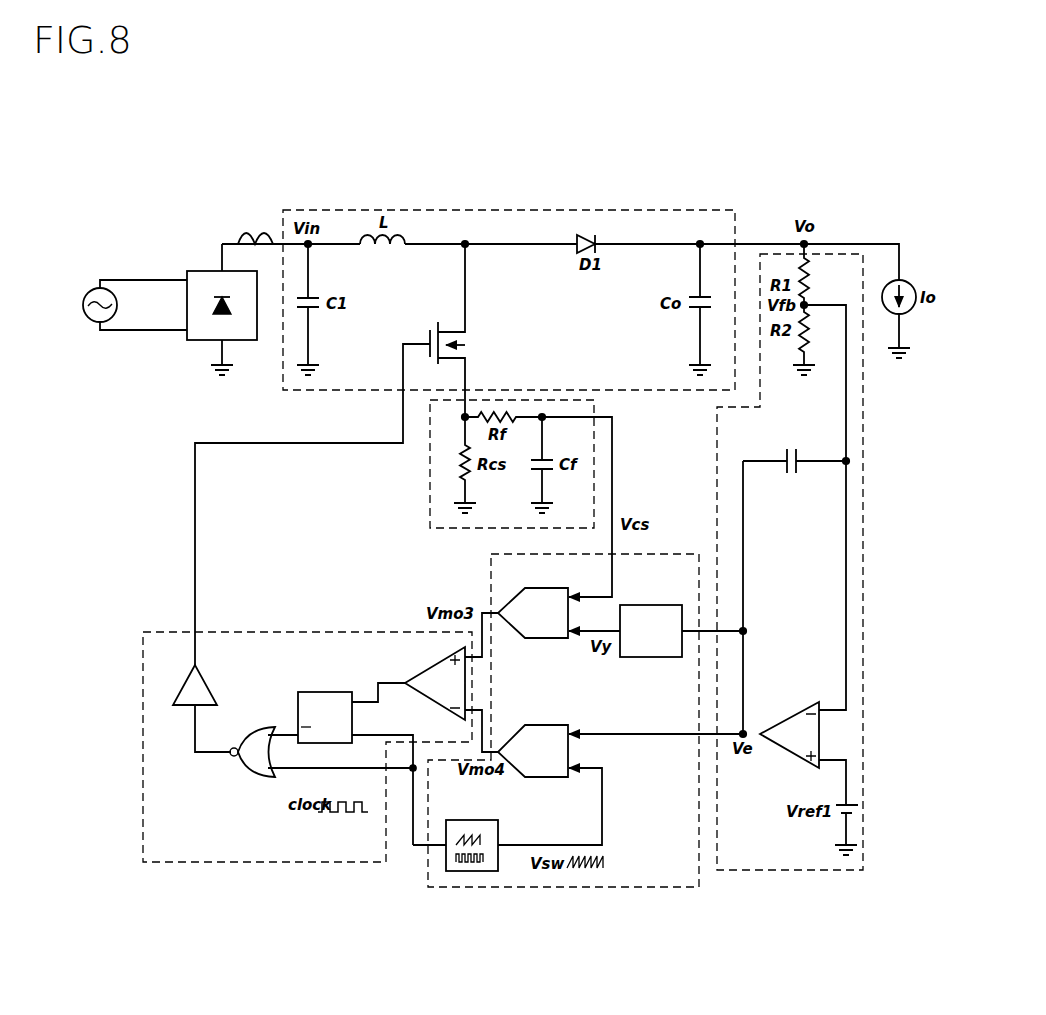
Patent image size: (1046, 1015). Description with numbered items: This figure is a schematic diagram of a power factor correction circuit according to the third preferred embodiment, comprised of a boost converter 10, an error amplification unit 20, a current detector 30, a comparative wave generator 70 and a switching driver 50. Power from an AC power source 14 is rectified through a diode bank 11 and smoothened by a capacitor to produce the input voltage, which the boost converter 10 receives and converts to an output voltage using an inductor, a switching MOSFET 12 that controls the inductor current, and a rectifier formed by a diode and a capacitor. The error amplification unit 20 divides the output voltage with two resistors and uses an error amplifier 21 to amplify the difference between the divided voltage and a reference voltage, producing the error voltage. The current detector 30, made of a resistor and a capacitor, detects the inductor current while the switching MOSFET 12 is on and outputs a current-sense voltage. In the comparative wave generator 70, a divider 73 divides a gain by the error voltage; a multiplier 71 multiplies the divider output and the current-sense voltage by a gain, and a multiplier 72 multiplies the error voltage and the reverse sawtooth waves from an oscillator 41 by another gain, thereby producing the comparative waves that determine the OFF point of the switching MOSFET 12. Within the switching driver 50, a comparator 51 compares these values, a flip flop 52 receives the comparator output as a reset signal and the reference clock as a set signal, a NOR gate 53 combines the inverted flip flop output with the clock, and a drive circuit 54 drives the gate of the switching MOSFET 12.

The boost converter 10 is at (560, 208).
The diode bank 11 is at (226, 300).
The switching MOSFET 12 is at (465, 345).
The AC power source 14 is at (92, 322).
The error amplification unit 20 is at (782, 875).
The error amplifier 21 is at (787, 752).
The current detector 30 is at (430, 490).
The oscillator 41 is at (470, 872).
The switching driver 50 is at (262, 865).
The comparator 51 is at (427, 668).
The flip flop 52 is at (325, 691).
The NOR gate 53 is at (243, 772).
The drive circuit 54 is at (180, 688).
The comparative wave generator 70 is at (548, 890).
The multiplier 71 is at (534, 640).
The multiplier 72 is at (532, 780).
The divider 73 is at (648, 658).